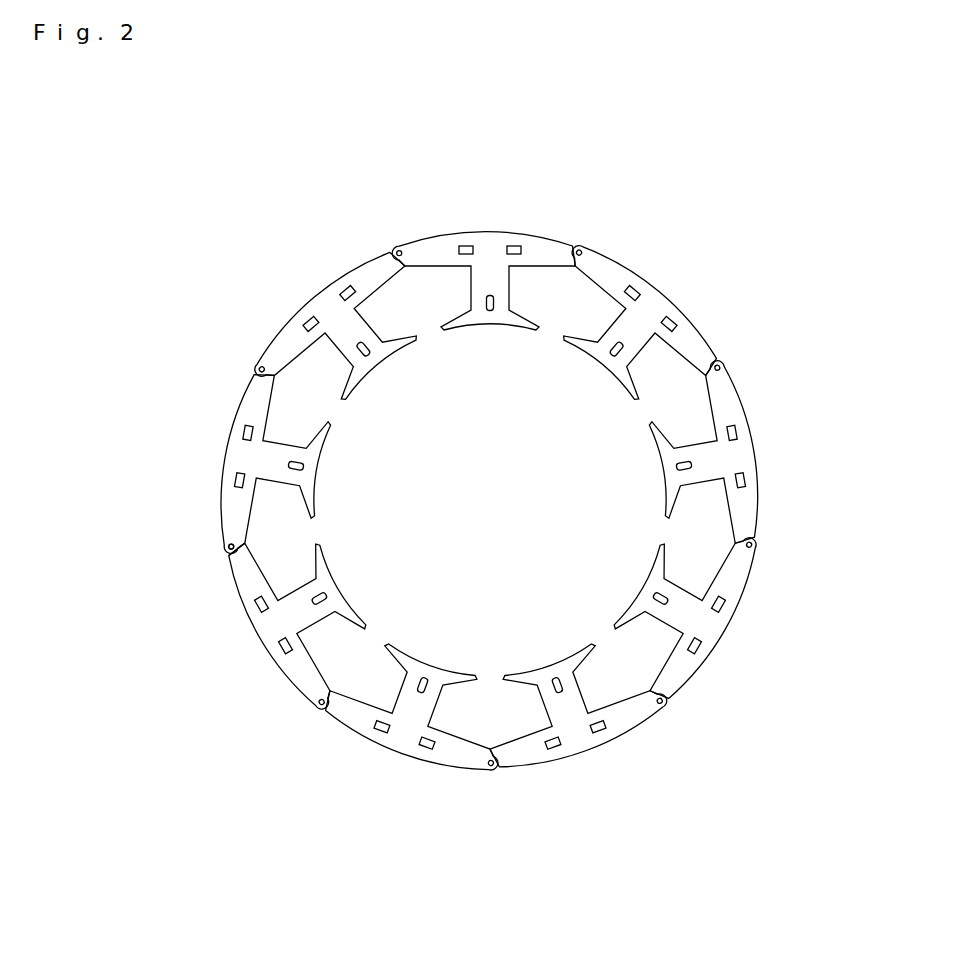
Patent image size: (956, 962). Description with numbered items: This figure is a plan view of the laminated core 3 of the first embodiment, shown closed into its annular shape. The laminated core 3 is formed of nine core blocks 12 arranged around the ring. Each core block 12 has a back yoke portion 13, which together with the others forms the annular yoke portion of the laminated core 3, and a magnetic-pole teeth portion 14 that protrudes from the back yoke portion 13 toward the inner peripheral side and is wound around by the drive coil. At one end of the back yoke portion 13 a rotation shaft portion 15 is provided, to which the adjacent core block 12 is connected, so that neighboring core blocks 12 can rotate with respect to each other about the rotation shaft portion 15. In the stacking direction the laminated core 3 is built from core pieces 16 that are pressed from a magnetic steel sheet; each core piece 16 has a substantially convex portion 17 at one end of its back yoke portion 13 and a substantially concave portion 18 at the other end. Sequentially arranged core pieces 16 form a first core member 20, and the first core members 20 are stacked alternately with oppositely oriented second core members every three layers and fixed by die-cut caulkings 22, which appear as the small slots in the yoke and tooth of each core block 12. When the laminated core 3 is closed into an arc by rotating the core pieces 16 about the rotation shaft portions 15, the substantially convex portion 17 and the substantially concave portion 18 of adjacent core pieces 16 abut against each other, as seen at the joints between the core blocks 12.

The laminated core 3 is at (648, 282).
The core block 12 is at (723, 624).
The back yoke portion 13 is at (493, 451).
The magnetic-pole teeth portion 14 is at (705, 458).
The rotation shaft portion 15 is at (230, 547).
The core piece 16 is at (700, 672).
The substantially convex portion 17 is at (230, 556).
The substantially concave portion 18 is at (264, 362).
The first core member 20 is at (394, 751).
The die-cut caulking 22 is at (323, 598).